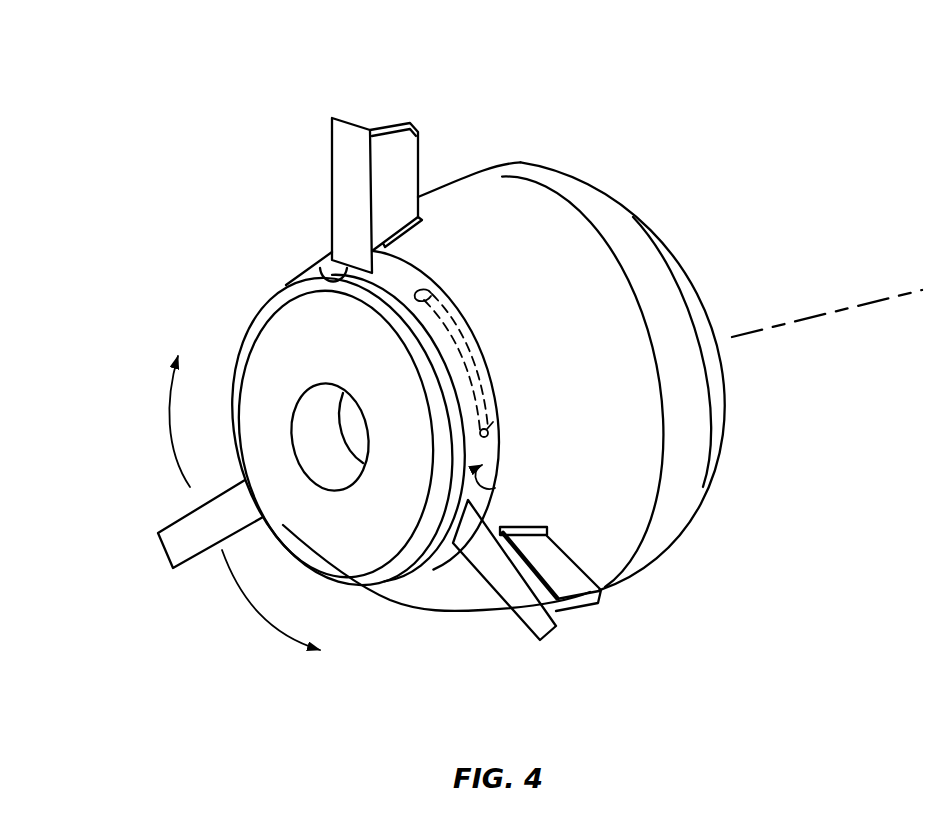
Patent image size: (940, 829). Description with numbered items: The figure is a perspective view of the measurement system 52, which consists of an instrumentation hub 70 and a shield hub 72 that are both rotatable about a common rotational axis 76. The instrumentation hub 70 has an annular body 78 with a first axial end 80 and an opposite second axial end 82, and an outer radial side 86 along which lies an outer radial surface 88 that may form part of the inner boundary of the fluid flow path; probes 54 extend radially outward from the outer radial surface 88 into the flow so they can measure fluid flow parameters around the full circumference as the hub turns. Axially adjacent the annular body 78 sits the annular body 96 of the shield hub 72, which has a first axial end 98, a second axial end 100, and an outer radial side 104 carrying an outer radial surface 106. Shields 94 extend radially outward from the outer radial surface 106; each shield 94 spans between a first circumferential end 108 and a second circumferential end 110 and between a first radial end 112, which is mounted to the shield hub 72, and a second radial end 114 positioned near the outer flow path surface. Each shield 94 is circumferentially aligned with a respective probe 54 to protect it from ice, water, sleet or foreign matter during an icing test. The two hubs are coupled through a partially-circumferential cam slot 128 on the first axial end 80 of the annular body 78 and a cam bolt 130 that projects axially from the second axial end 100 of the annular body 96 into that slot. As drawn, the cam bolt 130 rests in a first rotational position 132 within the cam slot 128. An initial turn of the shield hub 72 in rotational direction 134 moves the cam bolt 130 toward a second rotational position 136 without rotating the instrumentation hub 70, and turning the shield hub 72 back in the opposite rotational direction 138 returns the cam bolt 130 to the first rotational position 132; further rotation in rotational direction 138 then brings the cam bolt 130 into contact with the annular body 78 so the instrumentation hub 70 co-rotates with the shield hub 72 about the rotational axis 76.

The measurement system 52 is at (733, 101).
The probe 54 is at (432, 140).
The instrumentation hub 70 is at (500, 222).
The shield hub 72 is at (285, 280).
The rotational axis 76 is at (908, 295).
The annular body 78 is at (652, 288).
The first axial end 80 is at (497, 488).
The second axial end 82 is at (652, 218).
The outer radial side 86 is at (588, 213).
The outer radial surface 88 is at (546, 213).
The shield 94 is at (325, 153).
The annular body 96 is at (416, 582).
The first axial end 98 is at (236, 362).
The second axial end 100 is at (428, 268).
The outer radial side 104 is at (392, 282).
The outer radial surface 106 is at (478, 500).
The first circumferential end 108 is at (492, 593).
The second circumferential end 110 is at (525, 558).
The first radial end 112 is at (318, 277).
The second radial end 114 is at (352, 116).
The cam slot 128 is at (470, 358).
The cam bolt 130 is at (500, 413).
The first rotational position 132 is at (505, 432).
The rotational direction 134 is at (253, 598).
The second rotational position 136 is at (424, 292).
The rotational direction 138 is at (178, 424).